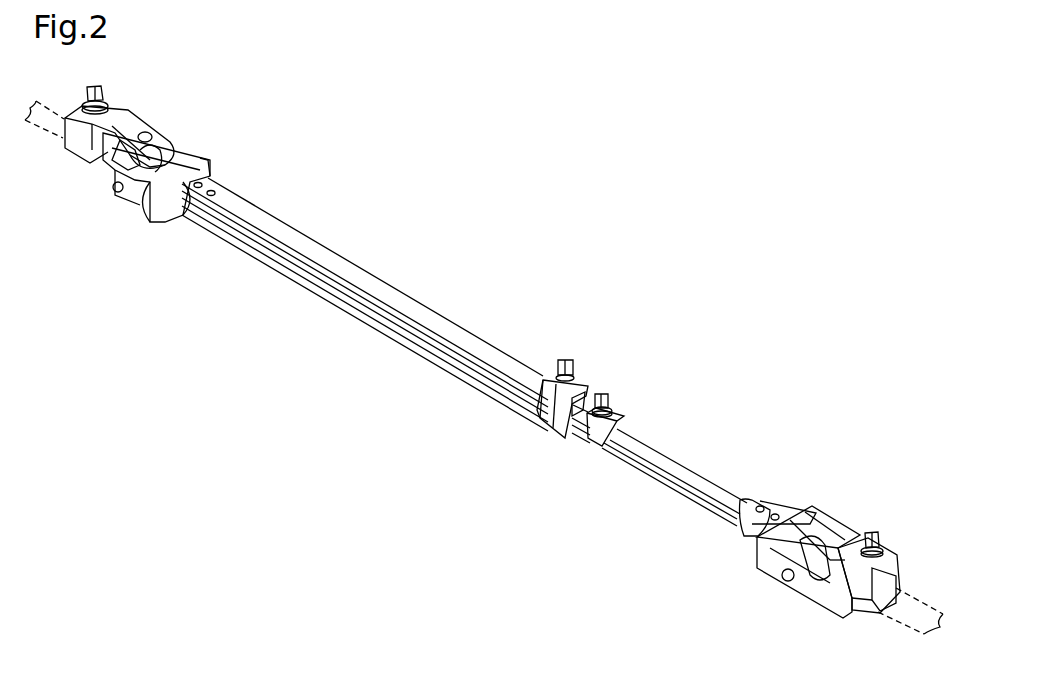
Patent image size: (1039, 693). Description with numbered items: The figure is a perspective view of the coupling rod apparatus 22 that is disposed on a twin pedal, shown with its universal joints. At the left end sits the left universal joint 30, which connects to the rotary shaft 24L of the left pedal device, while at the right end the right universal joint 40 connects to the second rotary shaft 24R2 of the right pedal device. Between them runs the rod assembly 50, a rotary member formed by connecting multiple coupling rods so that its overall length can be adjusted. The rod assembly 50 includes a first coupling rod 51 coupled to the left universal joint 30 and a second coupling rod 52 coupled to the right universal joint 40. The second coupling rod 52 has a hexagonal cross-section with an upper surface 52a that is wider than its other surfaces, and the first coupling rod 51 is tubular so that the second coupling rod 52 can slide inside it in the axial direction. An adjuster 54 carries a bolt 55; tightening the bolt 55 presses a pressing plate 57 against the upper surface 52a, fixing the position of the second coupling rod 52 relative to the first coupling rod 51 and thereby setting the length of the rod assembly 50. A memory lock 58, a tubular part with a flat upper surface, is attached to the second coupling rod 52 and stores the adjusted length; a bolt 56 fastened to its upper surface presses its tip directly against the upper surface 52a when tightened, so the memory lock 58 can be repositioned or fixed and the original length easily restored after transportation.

The coupling rod apparatus 22 is at (491, 214).
The rotary shaft 24L is at (53, 131).
The second rotary shaft 24R2 is at (917, 636).
The left universal joint 30 is at (166, 149).
The right universal joint 40 is at (841, 533).
The rod assembly 50 is at (476, 357).
The first coupling rod 51 is at (321, 246).
The second coupling rod 52 is at (724, 485).
The upper surface 52a is at (665, 462).
The adjuster 54 is at (583, 380).
The bolt 55 is at (565, 358).
The bolt 56 is at (605, 395).
The pressing plate 57 is at (583, 414).
The memory lock 58 is at (623, 418).